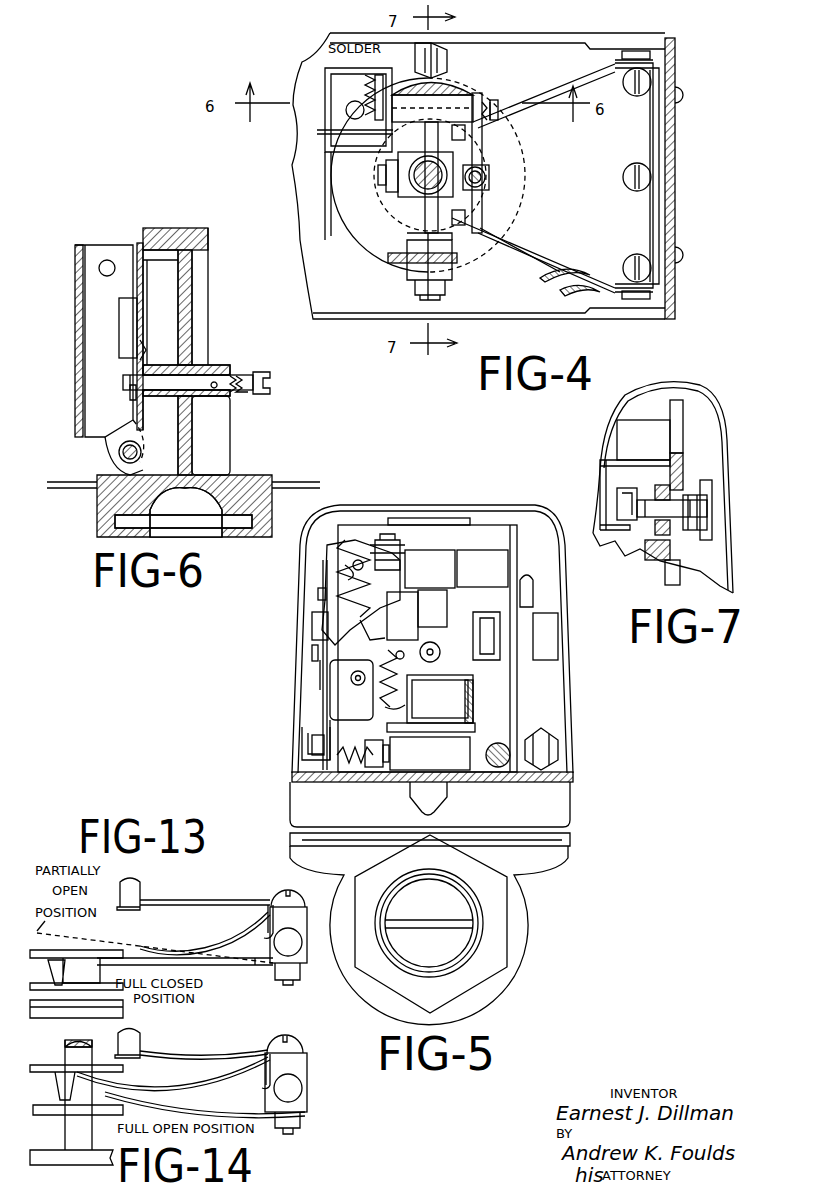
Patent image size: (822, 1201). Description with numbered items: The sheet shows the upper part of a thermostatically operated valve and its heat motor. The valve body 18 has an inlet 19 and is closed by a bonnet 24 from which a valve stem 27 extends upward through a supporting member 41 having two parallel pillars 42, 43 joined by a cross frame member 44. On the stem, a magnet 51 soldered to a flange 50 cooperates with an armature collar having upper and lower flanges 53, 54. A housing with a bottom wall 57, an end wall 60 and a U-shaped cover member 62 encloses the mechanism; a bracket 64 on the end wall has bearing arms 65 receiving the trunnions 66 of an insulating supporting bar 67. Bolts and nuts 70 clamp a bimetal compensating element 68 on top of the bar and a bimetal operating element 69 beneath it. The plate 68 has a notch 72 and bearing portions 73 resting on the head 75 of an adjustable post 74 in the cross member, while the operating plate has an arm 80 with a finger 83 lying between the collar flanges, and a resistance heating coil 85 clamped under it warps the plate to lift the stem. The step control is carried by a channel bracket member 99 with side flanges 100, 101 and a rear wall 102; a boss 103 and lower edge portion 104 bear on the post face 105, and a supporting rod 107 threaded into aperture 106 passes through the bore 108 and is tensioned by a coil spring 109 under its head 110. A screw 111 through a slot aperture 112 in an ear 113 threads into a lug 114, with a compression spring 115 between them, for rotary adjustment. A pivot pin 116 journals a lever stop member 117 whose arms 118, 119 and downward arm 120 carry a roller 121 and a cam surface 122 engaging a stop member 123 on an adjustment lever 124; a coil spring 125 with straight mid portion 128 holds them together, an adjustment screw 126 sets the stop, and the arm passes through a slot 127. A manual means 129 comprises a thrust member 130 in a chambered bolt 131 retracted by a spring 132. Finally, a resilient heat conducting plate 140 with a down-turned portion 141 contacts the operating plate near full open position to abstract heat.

In FIG. 5, the valve body 18 is at (518, 918).
In FIG. 5, the inlet 19 is at (439, 953).
In FIG. 6, the bonnet 24 is at (248, 475).
In FIG. 5, the bonnet 24 is at (300, 818).
In FIG. 4, the valve stem 27 is at (415, 185).
In FIG. 5, the valve stem 27 is at (430, 600).
In FIG. 7, the valve stem 27 is at (610, 550).
In FIG. 13, the valve stem 27 is at (90, 948).
In FIG. 14, the valve stem 27 is at (75, 1133).
In FIG. 5, the supporting member 41 is at (562, 517).
In FIG. 4, the supporting pillar 42 is at (445, 92).
In FIG. 6, the supporting pillar 42 is at (205, 305).
In FIG. 5, the supporting pillar 42 is at (330, 720).
In FIG. 4, the supporting pillar 43 is at (398, 265).
In FIG. 5, the supporting pillar 43 is at (513, 558).
In FIG. 7, the supporting pillar 43 is at (683, 435).
In FIG. 6, the cross frame member 44 is at (193, 235).
In FIG. 5, the cross frame member 44 is at (488, 527).
In FIG. 5, the flange 50 is at (440, 732).
In FIG. 5, the annular magnet 51 is at (473, 712).
In FIG. 7, the annular magnet 51 is at (648, 555).
In FIG. 13, the annular magnet 51 is at (95, 1018).
In FIG. 14, the annular magnet 51 is at (88, 1160).
In FIG. 5, the upper flange 53 is at (476, 635).
In FIG. 7, the upper flange 53 is at (600, 480).
In FIG. 4, the lower flange 54 is at (400, 195).
In FIG. 5, the lower flange 54 is at (468, 680).
In FIG. 6, the bottom wall 57 is at (300, 490).
In FIG. 4, the end wall 60 is at (676, 205).
In FIG. 5, the cover member 62 is at (415, 507).
In FIG. 4, the bracket 64 is at (660, 127).
In FIG. 4, the bearing arm 65 is at (620, 297).
In FIG. 4, the end trunnion 66 is at (636, 300).
In FIG. 13, the end trunnion 66 is at (292, 936).
In FIG. 14, the end trunnion 66 is at (295, 1088).
In FIG. 13, the supporting bar 67 is at (307, 958).
In FIG. 14, the supporting bar 67 is at (307, 1060).
In FIG. 4, the compensating element 68 is at (569, 203).
In FIG. 5, the compensating element 68 is at (497, 585).
In FIG. 7, the compensating element 68 is at (650, 455).
In FIG. 13, the compensating element 68 is at (198, 900).
In FIG. 14, the compensating element 68 is at (210, 1053).
In FIG. 4, the operating element 69 is at (515, 265).
In FIG. 13, the operating element 69 is at (252, 967).
In FIG. 14, the operating element 69 is at (270, 1118).
In FIG. 4, the bolts and nuts 70 is at (632, 258).
In FIG. 13, the bolts and nuts 70 is at (280, 892).
In FIG. 14, the bolts and nuts 70 is at (290, 1038).
In FIG. 4, the notch 72 is at (490, 190).
In FIG. 4, the bearing portion 73 is at (482, 235).
In FIG. 4, the supporting post 74 is at (486, 176).
In FIG. 13, the supporting post 74 is at (140, 888).
In FIG. 14, the supporting post 74 is at (140, 1042).
In FIG. 4, the head 75 is at (487, 168).
In FIG. 4, the arm 80 is at (425, 225).
In FIG. 7, the arm 80 is at (627, 490).
In FIG. 7, the finger 83 is at (610, 508).
In FIG. 13, the heating coil 85 is at (233, 967).
In FIG. 6, the bracket member 99 is at (91, 245).
In FIG. 6, the side flange 100 is at (143, 272).
In FIG. 5, the side flange 100 is at (368, 706).
In FIG. 4, the side flange 101 is at (327, 180).
In FIG. 6, the side flange 101 is at (75, 345).
In FIG. 4, the rear wall 102 is at (325, 78).
In FIG. 6, the rear wall 102 is at (127, 243).
In FIG. 5, the rear wall 102 is at (324, 700).
In FIG. 6, the boss 103 is at (143, 345).
In FIG. 6, the lower edge portion 104 is at (143, 425).
In FIG. 6, the side face 105 is at (147, 300).
In FIG. 6, the screw-threaded aperture 106 is at (130, 395).
In FIG. 6, the supporting rod 107 is at (215, 375).
In FIG. 5, the supporting rod 107 is at (353, 675).
In FIG. 6, the bore 108 is at (215, 405).
In FIG. 4, the helical coil spring 109 is at (490, 100).
In FIG. 6, the helical coil spring 109 is at (248, 372).
In FIG. 4, the head 110 is at (500, 100).
In FIG. 6, the head 110 is at (270, 372).
In FIG. 6, the screw 111 is at (119, 452).
In FIG. 5, the screw 111 is at (310, 760).
In FIG. 6, the slot aperture 112 is at (130, 440).
In FIG. 6, the ear 113 is at (110, 465).
In FIG. 5, the ear 113 is at (315, 762).
In FIG. 5, the lug 114 is at (373, 767).
In FIG. 5, the compression spring 115 is at (345, 765).
In FIG. 4, the pivot pin 116 is at (320, 136).
In FIG. 5, the pivot pin 116 is at (390, 635).
In FIG. 5, the lever stop member 117 is at (412, 626).
In FIG. 5, the arm 118 is at (330, 628).
In FIG. 5, the arm 119 is at (405, 660).
In FIG. 5, the downward arm 120 is at (405, 708).
In FIG. 4, the roller 121 is at (386, 190).
In FIG. 5, the roller 121 is at (445, 640).
In FIG. 5, the cam abutment surface 122 is at (312, 620).
In FIG. 5, the stop member 123 is at (318, 595).
In FIG. 5, the adjustment lever 124 is at (352, 525).
In FIG. 5, the coil spring 125 is at (400, 690).
In FIG. 5, the adjustment screw 126 is at (400, 560).
In FIG. 6, the slot 127 is at (125, 335).
In FIG. 5, the slot 127 is at (312, 652).
In FIG. 5, the straight mid portion 128 is at (320, 670).
In FIG. 5, the manual means 129 is at (558, 625).
In FIG. 4, the thrust member 130 is at (445, 295).
In FIG. 5, the thrust member 130 is at (557, 655).
In FIG. 7, the thrust member 130 is at (707, 505).
In FIG. 7, the chambered bolt 131 is at (712, 525).
In FIG. 7, the retracting spring 132 is at (660, 484).
In FIG. 13, the heat conducting plate 140 is at (232, 928).
In FIG. 14, the heat conducting plate 140 is at (209, 1082).
In FIG. 13, the down-turned portion 141 is at (268, 918).
In FIG. 14, the down-turned portion 141 is at (266, 1070).